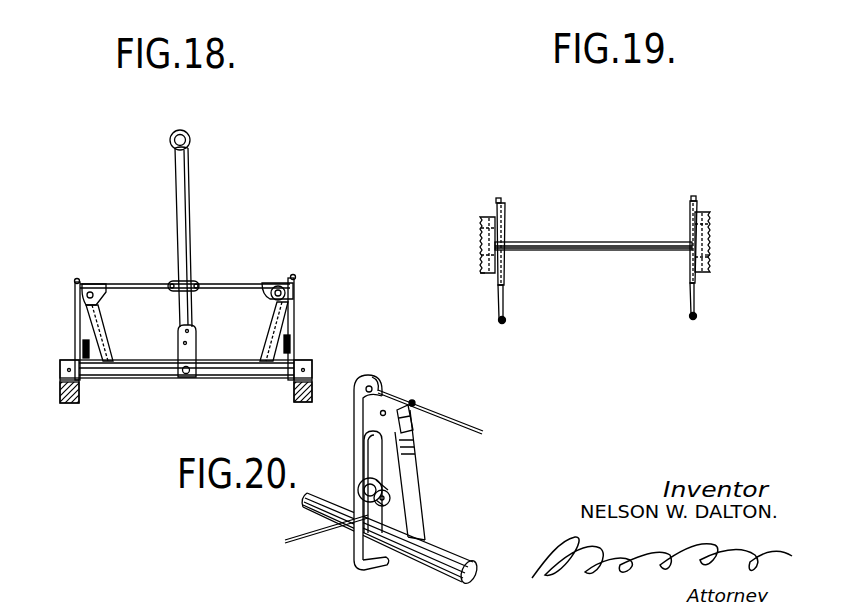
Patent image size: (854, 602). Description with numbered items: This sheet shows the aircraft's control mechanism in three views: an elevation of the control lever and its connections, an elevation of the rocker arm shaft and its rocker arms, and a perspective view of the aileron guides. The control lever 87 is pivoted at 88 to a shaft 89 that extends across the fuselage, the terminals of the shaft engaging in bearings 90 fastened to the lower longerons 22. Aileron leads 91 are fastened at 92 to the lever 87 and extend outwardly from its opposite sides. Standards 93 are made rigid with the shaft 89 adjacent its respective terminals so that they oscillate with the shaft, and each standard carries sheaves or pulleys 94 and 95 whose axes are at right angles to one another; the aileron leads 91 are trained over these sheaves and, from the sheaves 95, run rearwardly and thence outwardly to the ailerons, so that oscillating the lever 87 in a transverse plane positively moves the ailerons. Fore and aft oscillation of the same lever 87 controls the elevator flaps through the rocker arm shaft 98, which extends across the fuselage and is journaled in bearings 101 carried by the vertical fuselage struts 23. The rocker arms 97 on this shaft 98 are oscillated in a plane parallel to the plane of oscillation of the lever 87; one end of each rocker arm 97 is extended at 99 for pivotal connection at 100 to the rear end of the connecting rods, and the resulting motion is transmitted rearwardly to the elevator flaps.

In FIG. 18, the lower longeron 22 is at (67, 404).
In FIG. 19, the fuselage strut 23 is at (487, 274).
In FIG. 18, the control lever 87 is at (190, 165).
In FIG. 18, the pivot 88 is at (185, 378).
In FIG. 18, the shaft 89 is at (230, 375).
In FIG. 20, the shaft 89 is at (440, 551).
In FIG. 18, the bearing 90 is at (311, 357).
In FIG. 18, the aileron lead 91 is at (237, 283).
In FIG. 20, the aileron lead 91 is at (450, 416).
In FIG. 18, the fastening 92 is at (175, 282).
In FIG. 18, the standard 93 is at (75, 319).
In FIG. 20, the standard 93 is at (410, 473).
In FIG. 18, the sheave 94 is at (99, 296).
In FIG. 20, the sheave 94 is at (414, 412).
In FIG. 18, the sheave 95 is at (88, 343).
In FIG. 20, the sheave 95 is at (364, 485).
In FIG. 19, the rocker arm 97 is at (505, 224).
In FIG. 19, the rocker arm shaft 98 is at (585, 241).
In FIG. 19, the rocker arm extension 99 is at (504, 304).
In FIG. 19, the pivotal connection 100 is at (505, 322).
In FIG. 19, the bearing 101 is at (479, 231).